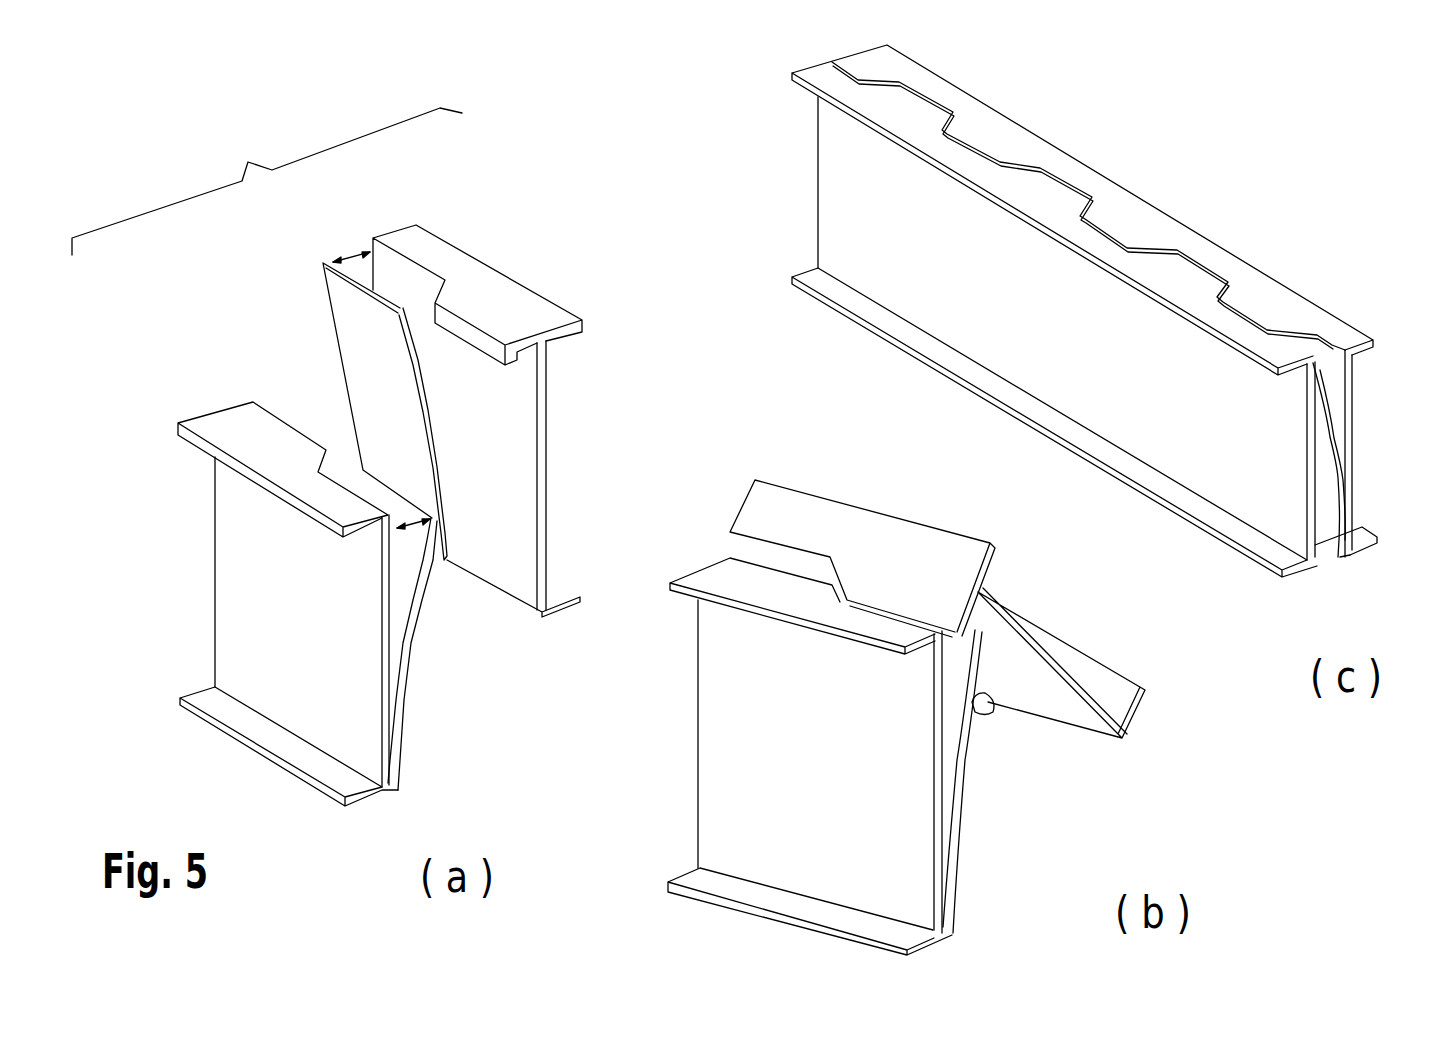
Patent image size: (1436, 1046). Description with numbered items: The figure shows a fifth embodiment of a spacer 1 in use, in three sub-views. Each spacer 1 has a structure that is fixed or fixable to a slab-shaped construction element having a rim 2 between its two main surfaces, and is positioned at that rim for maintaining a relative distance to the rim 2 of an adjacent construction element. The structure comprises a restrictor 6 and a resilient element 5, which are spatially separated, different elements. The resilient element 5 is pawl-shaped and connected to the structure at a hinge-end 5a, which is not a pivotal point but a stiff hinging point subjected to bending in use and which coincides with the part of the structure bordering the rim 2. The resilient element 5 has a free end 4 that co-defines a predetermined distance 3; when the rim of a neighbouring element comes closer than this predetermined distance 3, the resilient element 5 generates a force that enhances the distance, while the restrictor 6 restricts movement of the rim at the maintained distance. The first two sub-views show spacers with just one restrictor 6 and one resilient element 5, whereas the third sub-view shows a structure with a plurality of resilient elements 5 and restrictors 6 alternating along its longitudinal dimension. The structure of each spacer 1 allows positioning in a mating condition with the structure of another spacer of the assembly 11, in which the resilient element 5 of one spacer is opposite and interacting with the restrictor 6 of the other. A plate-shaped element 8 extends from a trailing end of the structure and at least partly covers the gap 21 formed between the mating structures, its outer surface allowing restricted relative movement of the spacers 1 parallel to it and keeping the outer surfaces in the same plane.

The spacer 1 is at (772, 529).
The rim 2 is at (745, 745).
The predetermined distance 3 is at (355, 254).
The free end 4 is at (323, 263).
The resilient element 5 is at (375, 353).
The hinge-end 5a is at (1348, 560).
The restrictor 6 is at (268, 420).
The plate-shaped element 8 is at (912, 102).
The assembly 11 is at (267, 181).
The gap 21 is at (1352, 413).